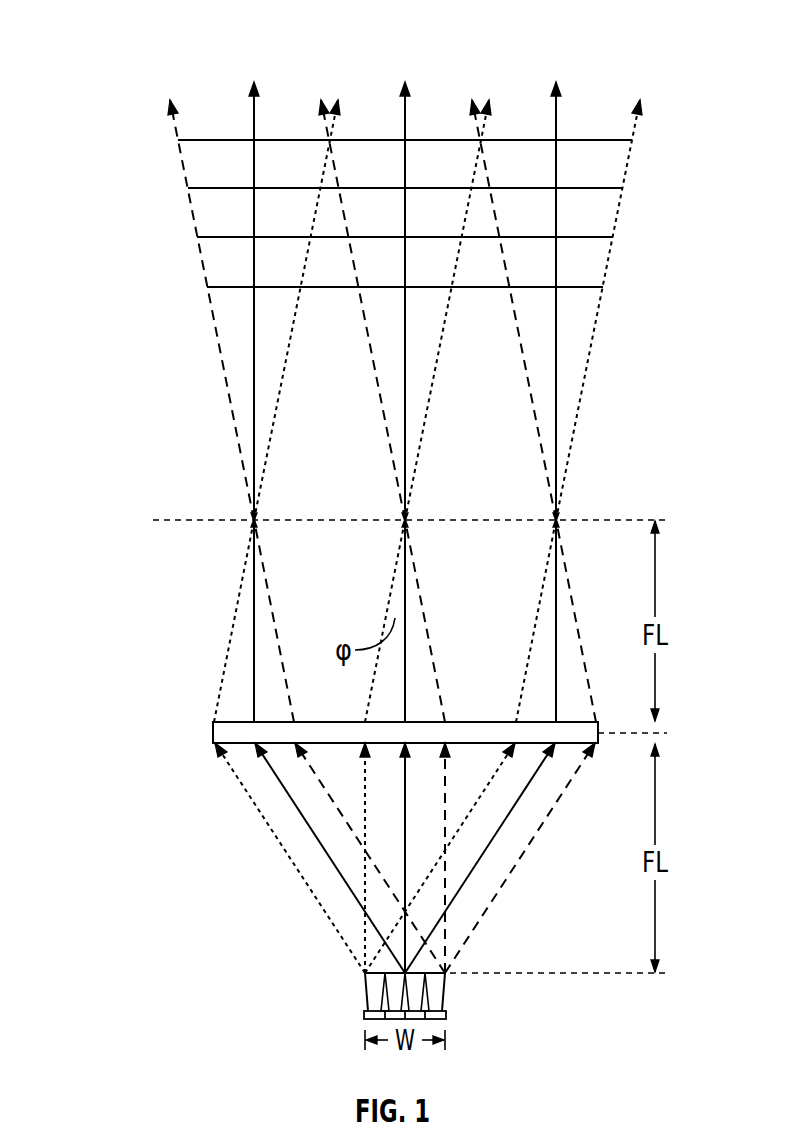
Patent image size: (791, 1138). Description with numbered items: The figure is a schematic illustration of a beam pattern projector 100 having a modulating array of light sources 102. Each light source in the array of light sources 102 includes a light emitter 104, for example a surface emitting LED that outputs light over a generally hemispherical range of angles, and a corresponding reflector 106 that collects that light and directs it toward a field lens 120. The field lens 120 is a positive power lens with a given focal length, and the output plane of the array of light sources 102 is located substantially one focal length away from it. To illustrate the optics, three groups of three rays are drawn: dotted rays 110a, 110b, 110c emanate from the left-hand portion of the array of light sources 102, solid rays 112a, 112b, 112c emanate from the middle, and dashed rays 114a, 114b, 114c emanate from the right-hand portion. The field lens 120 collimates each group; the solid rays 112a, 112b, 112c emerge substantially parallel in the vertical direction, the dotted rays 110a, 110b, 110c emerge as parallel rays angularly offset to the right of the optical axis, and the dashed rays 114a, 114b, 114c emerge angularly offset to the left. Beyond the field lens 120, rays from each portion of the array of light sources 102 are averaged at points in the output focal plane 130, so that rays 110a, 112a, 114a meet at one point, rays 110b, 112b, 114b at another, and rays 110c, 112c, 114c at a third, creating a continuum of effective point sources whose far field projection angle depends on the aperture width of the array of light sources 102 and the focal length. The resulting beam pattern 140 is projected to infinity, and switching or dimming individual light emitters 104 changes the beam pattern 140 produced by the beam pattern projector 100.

The beam pattern projector 100 is at (137, 58).
The array of light sources 102 is at (358, 997).
The light emitter 104 is at (447, 1015).
The reflector 106 is at (446, 980).
The dotted light ray 110a is at (245, 795).
The dotted light ray 110b is at (365, 799).
The dotted light ray 110c is at (472, 815).
The solid light ray 112a is at (250, 597).
The solid light ray 112b is at (400, 578).
The solid light ray 112c is at (556, 580).
The dashed light ray 114a is at (228, 395).
The dashed light ray 114b is at (378, 395).
The dashed light ray 114c is at (530, 395).
The field lens 120 is at (213, 733).
The output focal plane 130 is at (387, 520).
The beam pattern 140 is at (215, 140).